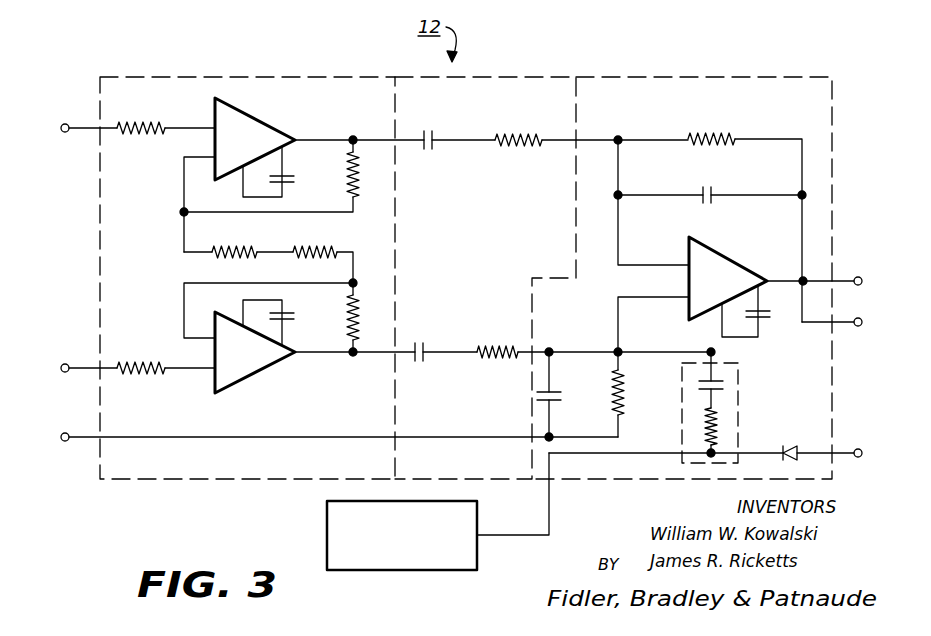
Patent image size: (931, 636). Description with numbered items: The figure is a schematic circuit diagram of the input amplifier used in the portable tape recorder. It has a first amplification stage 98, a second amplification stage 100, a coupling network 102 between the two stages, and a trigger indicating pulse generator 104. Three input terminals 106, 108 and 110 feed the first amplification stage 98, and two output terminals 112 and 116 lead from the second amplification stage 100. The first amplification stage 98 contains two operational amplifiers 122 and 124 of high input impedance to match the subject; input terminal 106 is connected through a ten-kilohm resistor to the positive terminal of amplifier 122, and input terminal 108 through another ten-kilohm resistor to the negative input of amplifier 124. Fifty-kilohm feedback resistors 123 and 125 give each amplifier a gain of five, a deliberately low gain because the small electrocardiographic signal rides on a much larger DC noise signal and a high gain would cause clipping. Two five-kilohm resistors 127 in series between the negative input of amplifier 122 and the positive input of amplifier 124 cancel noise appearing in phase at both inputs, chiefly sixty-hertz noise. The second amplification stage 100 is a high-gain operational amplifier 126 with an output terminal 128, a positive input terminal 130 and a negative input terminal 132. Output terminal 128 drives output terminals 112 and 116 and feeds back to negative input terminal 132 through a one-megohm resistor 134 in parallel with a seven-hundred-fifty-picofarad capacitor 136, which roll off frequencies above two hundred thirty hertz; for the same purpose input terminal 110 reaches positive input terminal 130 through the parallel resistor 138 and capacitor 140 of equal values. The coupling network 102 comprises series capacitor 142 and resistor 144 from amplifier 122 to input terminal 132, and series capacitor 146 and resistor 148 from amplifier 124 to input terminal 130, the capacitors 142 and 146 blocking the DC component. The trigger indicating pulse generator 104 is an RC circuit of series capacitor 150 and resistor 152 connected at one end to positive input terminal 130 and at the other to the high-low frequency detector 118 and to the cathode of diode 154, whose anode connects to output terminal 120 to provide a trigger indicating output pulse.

The first amplification stage 98 is at (192, 77).
The second amplification stage 100 is at (682, 76).
The coupling network 102 is at (480, 77).
The trigger indicating pulse generator 104 is at (740, 392).
The input terminal 106 is at (66, 124).
The input terminal 108 is at (66, 364).
The input terminal 110 is at (64, 434).
The output terminal 112 is at (862, 276).
The output terminal 116 is at (862, 317).
The high-low frequency detector 118 is at (444, 571).
The output terminal 120 is at (860, 448).
The operational amplifier 122 is at (250, 110).
The resistor 123 is at (347, 172).
The operational amplifier 124 is at (256, 373).
The resistor 125 is at (348, 308).
The operational amplifier 126 is at (700, 242).
The resistors 127 is at (292, 246).
The output terminal 128 is at (800, 280).
The positive input terminal 130 is at (616, 350).
The negative input terminal 132 is at (620, 198).
The resistor 134 is at (736, 132).
The capacitor 136 is at (702, 188).
The resistor 138 is at (626, 390).
The capacitor 140 is at (556, 392).
The capacitor 142 is at (446, 114).
The resistor 144 is at (538, 134).
The capacitor 146 is at (444, 326).
The resistor 148 is at (514, 346).
The capacitor 150 is at (704, 388).
The resistor 152 is at (708, 426).
The diode 154 is at (820, 416).